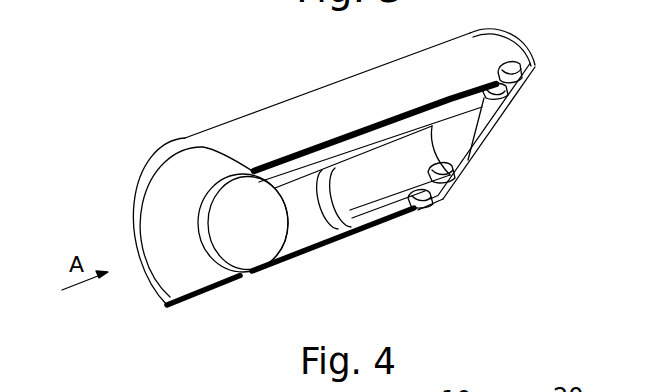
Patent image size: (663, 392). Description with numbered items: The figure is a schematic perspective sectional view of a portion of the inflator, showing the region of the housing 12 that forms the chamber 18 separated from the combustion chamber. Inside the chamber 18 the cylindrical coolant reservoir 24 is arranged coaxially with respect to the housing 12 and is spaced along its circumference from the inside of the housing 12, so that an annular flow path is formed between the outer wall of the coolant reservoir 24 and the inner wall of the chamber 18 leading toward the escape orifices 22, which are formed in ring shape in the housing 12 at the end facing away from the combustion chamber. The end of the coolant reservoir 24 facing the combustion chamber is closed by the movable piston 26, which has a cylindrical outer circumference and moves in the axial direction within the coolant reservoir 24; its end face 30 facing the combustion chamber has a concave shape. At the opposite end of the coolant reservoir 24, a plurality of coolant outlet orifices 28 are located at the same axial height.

The housing 12 is at (185, 303).
The chamber 18 is at (377, 213).
The escape orifices 22 is at (511, 68).
The coolant reservoir 24 is at (383, 163).
The piston 26 is at (302, 243).
The coolant outlet orifices 28 is at (505, 98).
The end face 30 is at (262, 243).